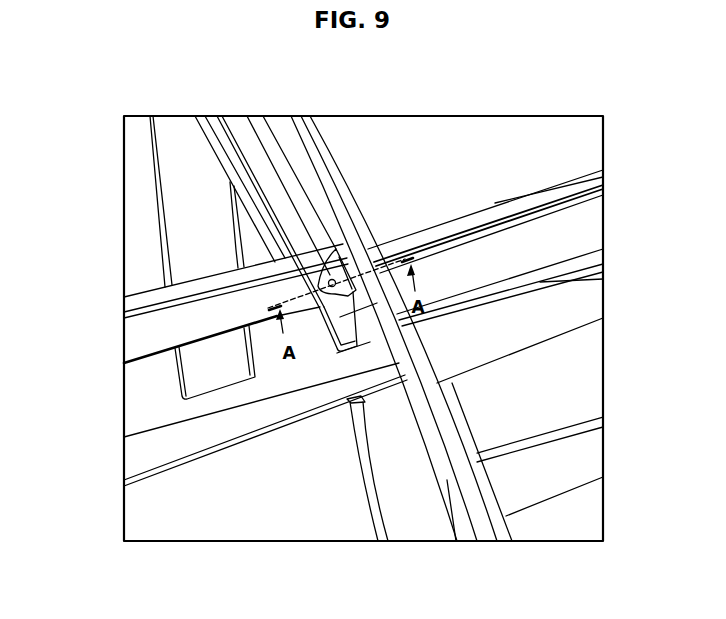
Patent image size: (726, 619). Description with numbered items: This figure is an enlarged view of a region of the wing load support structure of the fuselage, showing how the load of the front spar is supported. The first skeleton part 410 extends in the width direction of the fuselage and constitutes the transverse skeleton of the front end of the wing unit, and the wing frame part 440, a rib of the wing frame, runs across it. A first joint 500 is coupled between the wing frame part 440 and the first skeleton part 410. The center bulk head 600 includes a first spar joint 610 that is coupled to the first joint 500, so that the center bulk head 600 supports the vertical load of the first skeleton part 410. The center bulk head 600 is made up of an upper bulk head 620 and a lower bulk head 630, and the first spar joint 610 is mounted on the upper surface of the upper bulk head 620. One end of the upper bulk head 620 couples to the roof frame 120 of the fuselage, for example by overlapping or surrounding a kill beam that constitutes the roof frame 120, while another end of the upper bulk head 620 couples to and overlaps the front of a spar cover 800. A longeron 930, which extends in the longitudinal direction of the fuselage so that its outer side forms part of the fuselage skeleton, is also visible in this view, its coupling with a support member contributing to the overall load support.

The roof frame 120 is at (138, 342).
The first skeleton part 410 is at (443, 417).
The wing frame part 440 is at (546, 208).
The first joint 500 is at (318, 280).
The center bulk head 600 is at (362, 443).
The first spar joint 610 is at (323, 299).
The upper bulk head 620 is at (238, 160).
The lower bulk head 630 is at (238, 196).
The spar cover 800 is at (507, 148).
The longeron 930 is at (157, 445).